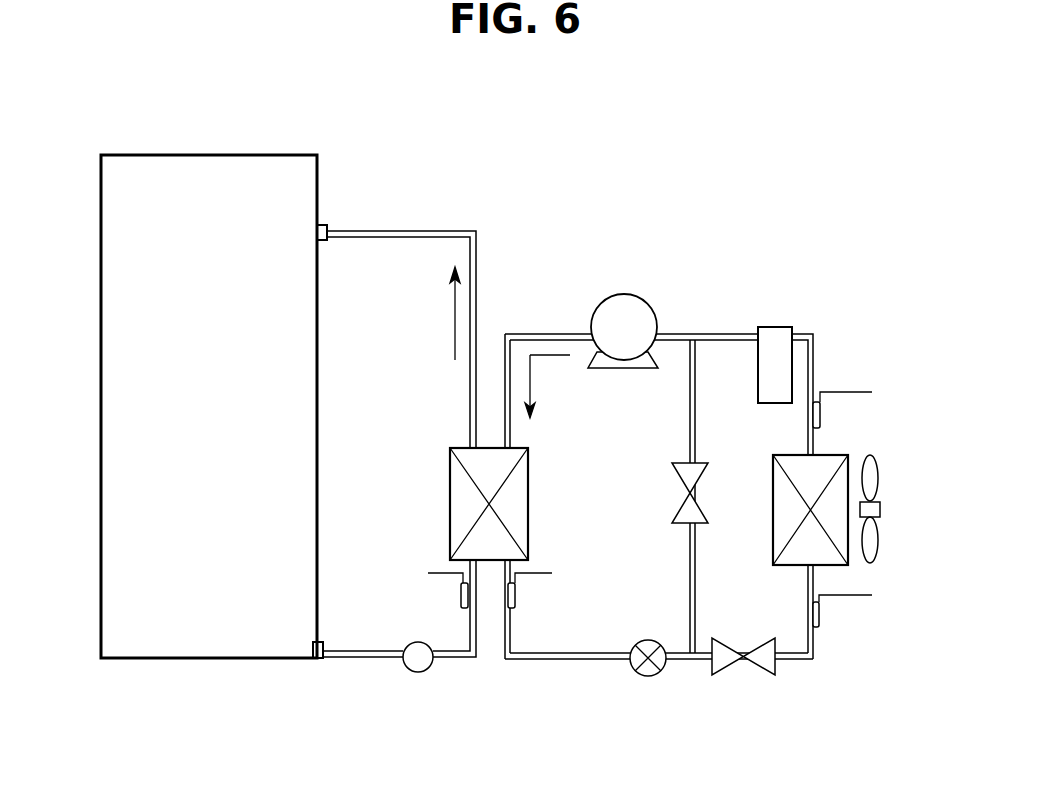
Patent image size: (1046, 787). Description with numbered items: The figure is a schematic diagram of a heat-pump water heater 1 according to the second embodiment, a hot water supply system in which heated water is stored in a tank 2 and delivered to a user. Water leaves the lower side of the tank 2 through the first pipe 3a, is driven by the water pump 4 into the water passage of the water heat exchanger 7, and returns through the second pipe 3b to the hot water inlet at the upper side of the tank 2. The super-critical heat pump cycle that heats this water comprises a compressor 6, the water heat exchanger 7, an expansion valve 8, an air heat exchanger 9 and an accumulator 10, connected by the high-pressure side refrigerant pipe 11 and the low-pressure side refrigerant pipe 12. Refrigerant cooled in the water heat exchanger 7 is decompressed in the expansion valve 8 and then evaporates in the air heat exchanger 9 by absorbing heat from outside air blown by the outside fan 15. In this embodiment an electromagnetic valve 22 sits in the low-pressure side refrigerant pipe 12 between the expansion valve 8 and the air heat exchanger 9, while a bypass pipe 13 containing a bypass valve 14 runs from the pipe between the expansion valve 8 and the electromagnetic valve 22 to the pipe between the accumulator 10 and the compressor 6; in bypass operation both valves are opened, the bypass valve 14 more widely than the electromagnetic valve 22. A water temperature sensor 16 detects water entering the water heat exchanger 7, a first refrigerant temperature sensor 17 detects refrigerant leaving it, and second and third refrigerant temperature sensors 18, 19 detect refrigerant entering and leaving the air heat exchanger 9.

The heat-pump water heater 1 is at (572, 195).
The tank 2 is at (101, 200).
The first pipe 3a is at (358, 660).
The second pipe 3b is at (405, 230).
The water pump 4 is at (424, 672).
The compressor 6 is at (643, 317).
The water heat exchanger 7 is at (517, 512).
The expansion valve 8 is at (645, 645).
The air heat exchanger 9 is at (782, 520).
The accumulator 10 is at (778, 326).
The high-pressure side refrigerant pipe 11 is at (540, 660).
The low-pressure side refrigerant pipe 12 is at (727, 334).
The bypass pipe 13 is at (696, 428).
The bypass valve 14 is at (680, 525).
The outside fan 15 is at (878, 548).
The water temperature sensor 16 is at (460, 595).
The first refrigerant temperature sensor 17 is at (515, 595).
The second refrigerant temperature sensor 18 is at (819, 612).
The third refrigerant temperature sensor 19 is at (820, 417).
The electromagnetic valve 22 is at (727, 665).